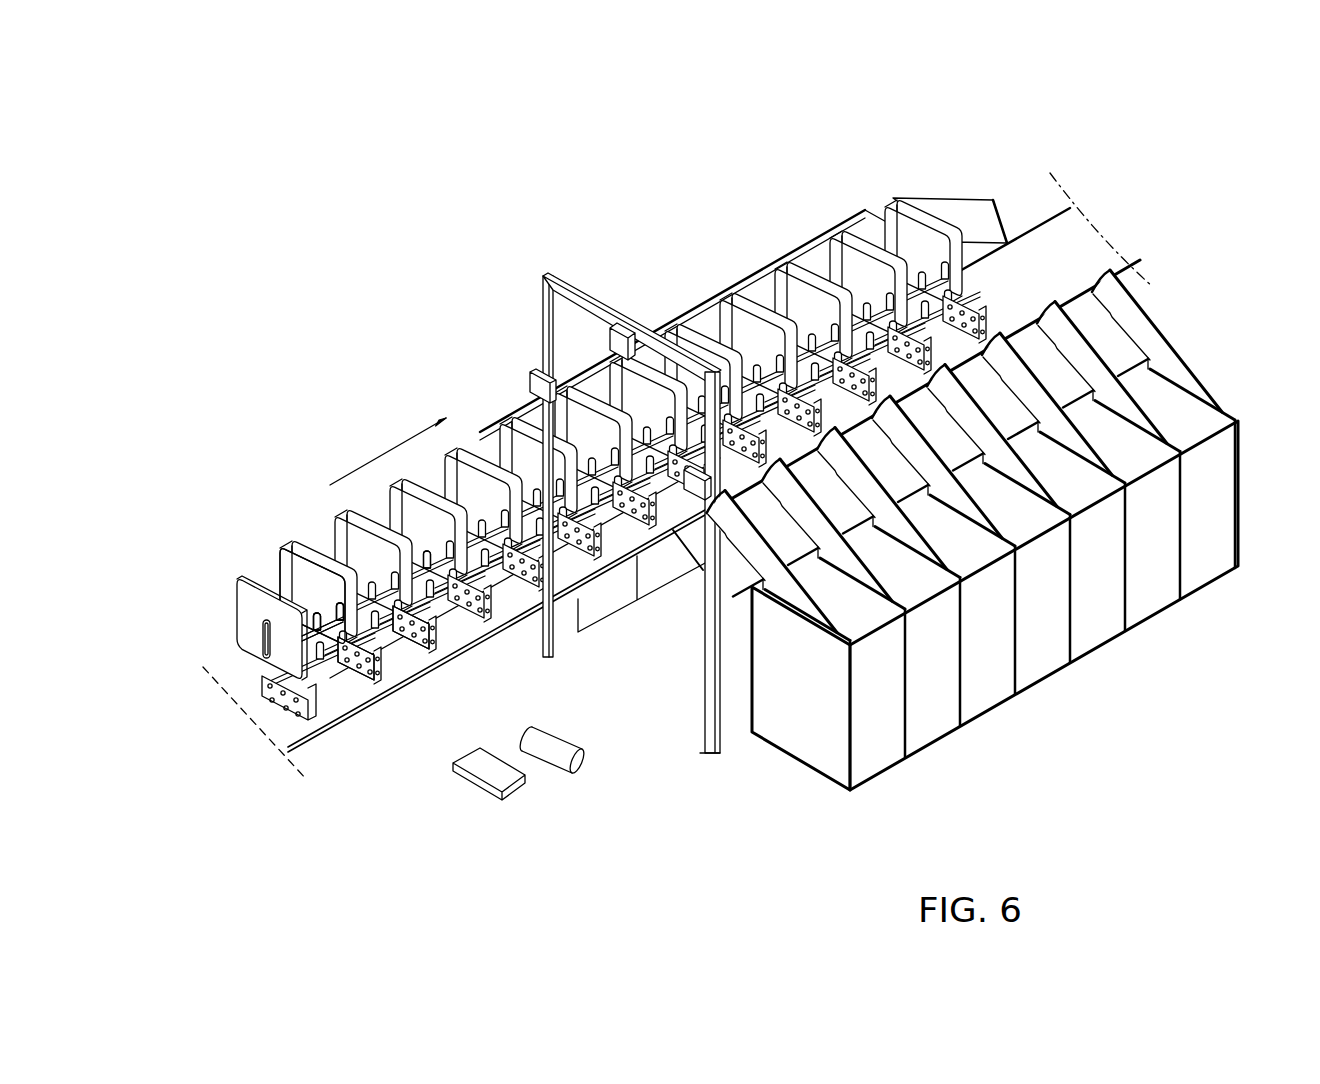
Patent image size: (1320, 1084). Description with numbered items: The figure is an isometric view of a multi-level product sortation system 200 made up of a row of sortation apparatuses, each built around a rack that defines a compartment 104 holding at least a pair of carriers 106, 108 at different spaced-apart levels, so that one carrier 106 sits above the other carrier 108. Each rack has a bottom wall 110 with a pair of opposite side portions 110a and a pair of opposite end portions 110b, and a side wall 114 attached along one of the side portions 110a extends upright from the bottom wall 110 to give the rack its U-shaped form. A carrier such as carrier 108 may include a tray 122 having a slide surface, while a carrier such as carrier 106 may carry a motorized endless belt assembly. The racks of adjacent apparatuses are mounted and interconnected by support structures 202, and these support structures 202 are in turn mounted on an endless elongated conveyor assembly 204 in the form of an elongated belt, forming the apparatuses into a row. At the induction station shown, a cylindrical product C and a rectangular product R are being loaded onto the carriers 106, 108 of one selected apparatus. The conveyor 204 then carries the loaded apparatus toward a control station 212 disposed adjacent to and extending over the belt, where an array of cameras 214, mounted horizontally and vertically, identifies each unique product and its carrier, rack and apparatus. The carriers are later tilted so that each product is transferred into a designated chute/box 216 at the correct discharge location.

The multi-level product sortation system 200 is at (880, 170).
The endless elongated conveyor assembly 204 is at (1060, 250).
The carrier 106 is at (307, 525).
The compartment 104 is at (305, 610).
The side wall 114 is at (248, 592).
The side portion of bottom wall 110a is at (297, 704).
The end portion of bottom wall 110b is at (340, 667).
The bottom wall 110 is at (330, 673).
The carrier 108 is at (323, 670).
The support structure 202 is at (297, 712).
The tray 122 is at (510, 430).
The control station 212 is at (580, 290).
The camera 214 is at (624, 322).
The chute/box 216 is at (783, 767).
The rectangular product R is at (478, 778).
The cylindrical product C is at (580, 775).